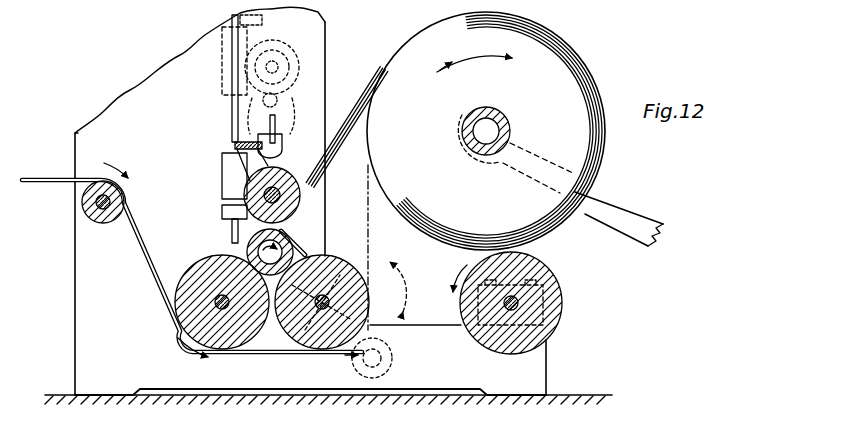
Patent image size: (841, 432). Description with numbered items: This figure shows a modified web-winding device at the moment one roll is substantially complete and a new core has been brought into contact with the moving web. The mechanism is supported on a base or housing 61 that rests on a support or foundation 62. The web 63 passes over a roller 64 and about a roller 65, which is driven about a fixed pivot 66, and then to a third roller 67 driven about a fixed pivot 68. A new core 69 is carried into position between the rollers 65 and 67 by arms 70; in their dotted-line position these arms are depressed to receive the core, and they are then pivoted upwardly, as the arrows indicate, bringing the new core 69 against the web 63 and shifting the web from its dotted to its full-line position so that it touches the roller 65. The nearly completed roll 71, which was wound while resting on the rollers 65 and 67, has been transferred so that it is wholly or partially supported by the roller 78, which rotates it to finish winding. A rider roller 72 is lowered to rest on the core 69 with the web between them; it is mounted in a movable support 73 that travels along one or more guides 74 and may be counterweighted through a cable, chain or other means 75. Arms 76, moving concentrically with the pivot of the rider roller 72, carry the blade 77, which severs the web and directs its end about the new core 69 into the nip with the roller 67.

The base or housing 61 is at (75, 300).
The support or foundation 62 is at (62, 393).
The web 63 is at (33, 178).
The roller 64 is at (84, 208).
The roller 65 is at (202, 262).
The fixed pivot 66 is at (216, 304).
The third roller 67 is at (297, 338).
The fixed pivot 68 is at (328, 303).
The new core 69 is at (297, 232).
The arms 70 is at (302, 250).
The roll 71 is at (560, 66).
The rider roller 72 is at (290, 177).
The movable support 73 is at (222, 170).
The guides 74 is at (232, 113).
The cable, chain or other means 75 is at (276, 128).
The arms 76 is at (281, 150).
The blade 77 is at (235, 145).
The roller 78 is at (537, 263).